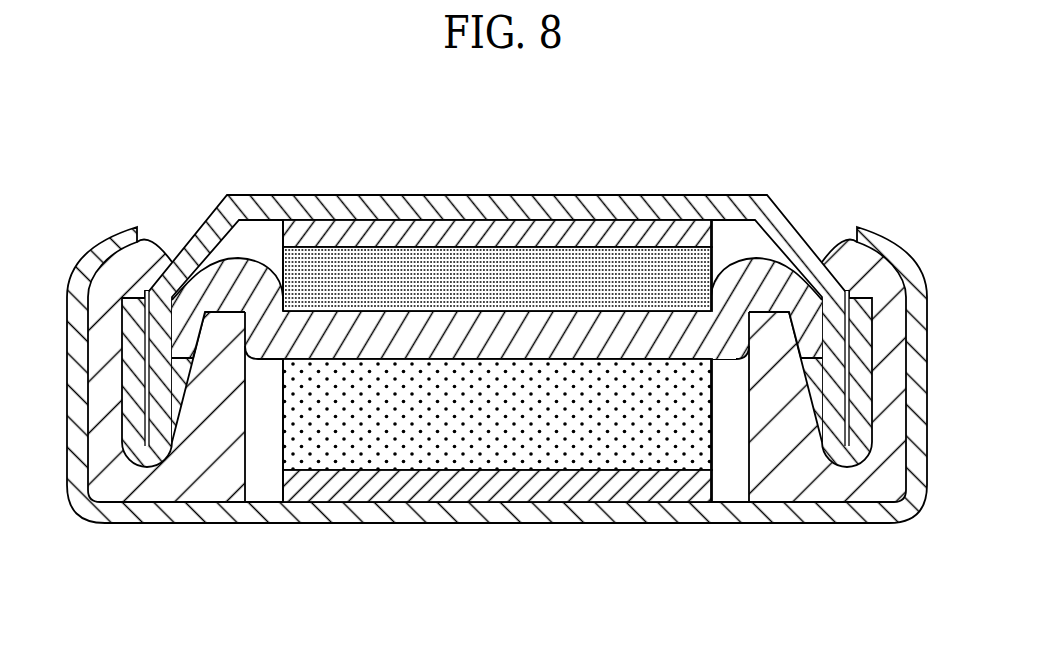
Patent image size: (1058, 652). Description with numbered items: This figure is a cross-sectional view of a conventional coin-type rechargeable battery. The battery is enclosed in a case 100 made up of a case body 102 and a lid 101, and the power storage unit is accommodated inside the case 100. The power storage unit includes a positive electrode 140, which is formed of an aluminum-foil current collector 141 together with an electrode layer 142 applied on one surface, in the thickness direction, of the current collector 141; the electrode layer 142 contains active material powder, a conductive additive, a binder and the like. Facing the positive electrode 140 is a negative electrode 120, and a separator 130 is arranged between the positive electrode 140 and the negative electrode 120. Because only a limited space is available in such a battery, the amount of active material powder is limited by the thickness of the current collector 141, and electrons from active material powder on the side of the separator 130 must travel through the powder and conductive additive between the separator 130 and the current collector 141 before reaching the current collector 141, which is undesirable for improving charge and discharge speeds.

The case 100 is at (905, 198).
The lid 101 is at (501, 195).
The case body 102 is at (726, 523).
The negative electrode 120 is at (277, 263).
The separator 130 is at (745, 257).
The positive electrode 140 is at (281, 449).
The current collector 141 is at (567, 488).
The electrode layer 142 is at (415, 450).